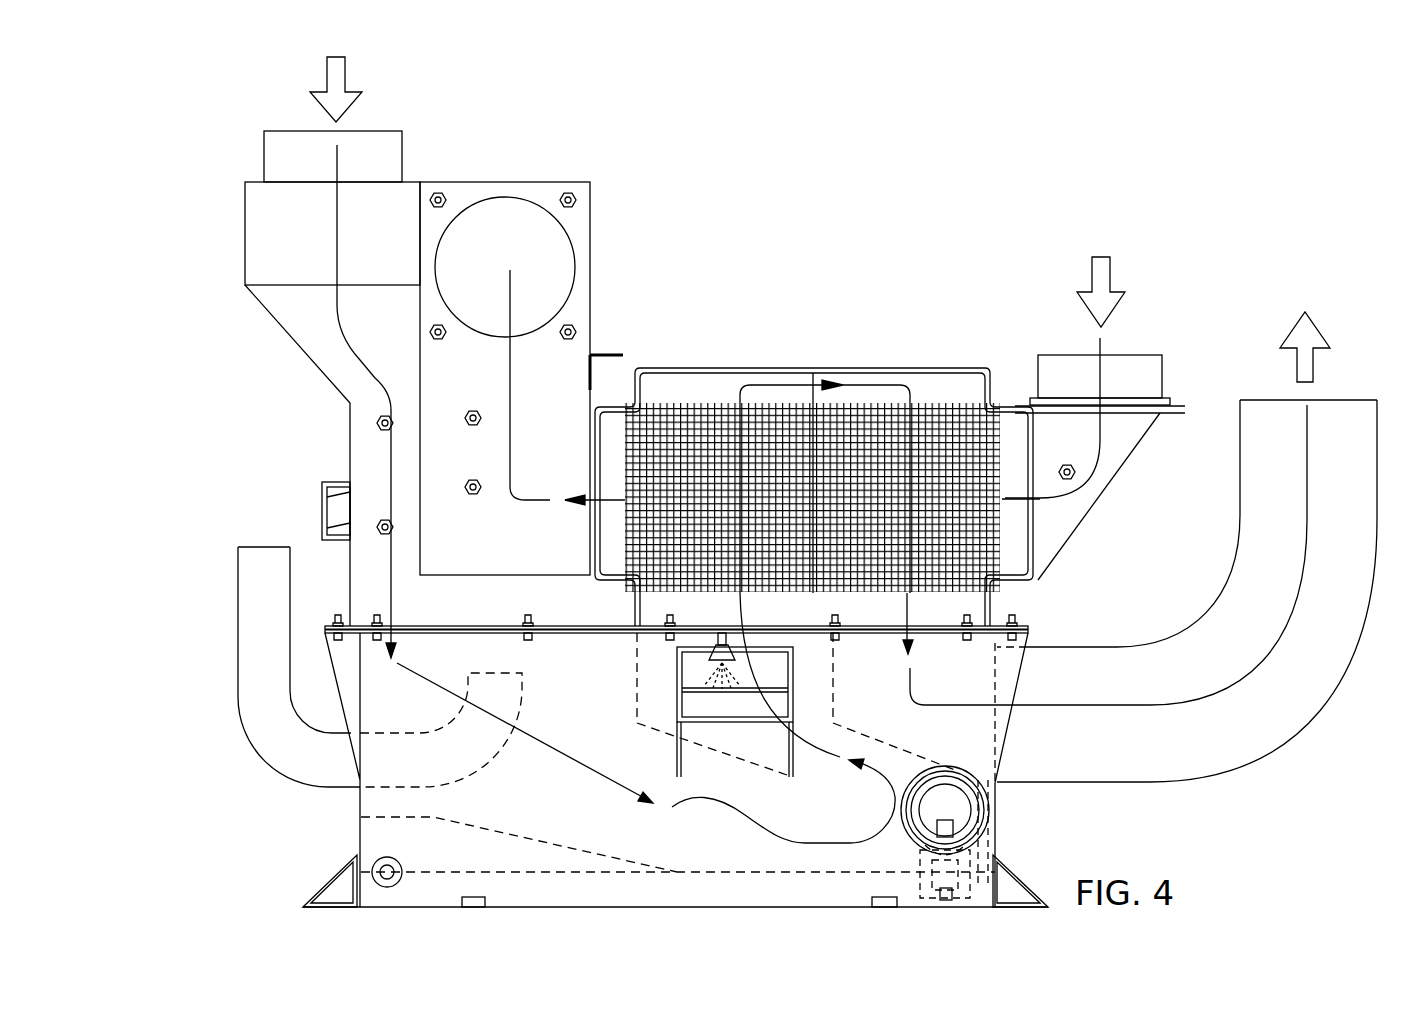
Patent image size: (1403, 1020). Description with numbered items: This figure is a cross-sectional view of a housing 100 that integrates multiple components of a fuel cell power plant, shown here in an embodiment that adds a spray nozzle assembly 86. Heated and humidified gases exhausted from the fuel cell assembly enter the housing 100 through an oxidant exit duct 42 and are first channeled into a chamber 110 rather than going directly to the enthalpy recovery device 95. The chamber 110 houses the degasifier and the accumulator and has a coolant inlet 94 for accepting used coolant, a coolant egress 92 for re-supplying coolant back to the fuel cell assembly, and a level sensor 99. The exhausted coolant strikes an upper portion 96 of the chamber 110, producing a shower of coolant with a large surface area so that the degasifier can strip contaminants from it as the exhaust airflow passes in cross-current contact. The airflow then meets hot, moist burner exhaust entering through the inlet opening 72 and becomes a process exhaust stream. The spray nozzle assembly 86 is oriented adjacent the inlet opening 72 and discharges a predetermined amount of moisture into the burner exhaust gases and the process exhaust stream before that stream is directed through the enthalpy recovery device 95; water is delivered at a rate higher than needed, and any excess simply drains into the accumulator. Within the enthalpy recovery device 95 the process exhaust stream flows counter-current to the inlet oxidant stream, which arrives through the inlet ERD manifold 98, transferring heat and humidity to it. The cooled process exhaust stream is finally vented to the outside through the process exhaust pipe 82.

The housing 100 is at (620, 124).
The oxidant exit duct 42 is at (270, 235).
The enthalpy recovery device 95 is at (697, 390).
The inlet ERD manifold 98 is at (1135, 368).
The process exhaust pipe 82 is at (1263, 515).
The coolant inlet 94 is at (257, 618).
The upper portion 96 is at (552, 643).
The spray nozzle assembly 86 is at (722, 648).
The inlet opening 72 is at (692, 668).
The coolant egress 92 is at (953, 807).
The level sensor 99 is at (400, 862).
The chamber 110 is at (608, 827).